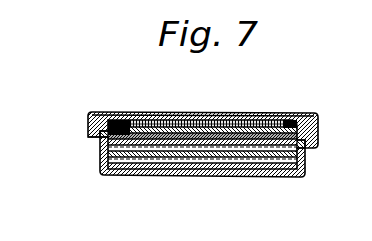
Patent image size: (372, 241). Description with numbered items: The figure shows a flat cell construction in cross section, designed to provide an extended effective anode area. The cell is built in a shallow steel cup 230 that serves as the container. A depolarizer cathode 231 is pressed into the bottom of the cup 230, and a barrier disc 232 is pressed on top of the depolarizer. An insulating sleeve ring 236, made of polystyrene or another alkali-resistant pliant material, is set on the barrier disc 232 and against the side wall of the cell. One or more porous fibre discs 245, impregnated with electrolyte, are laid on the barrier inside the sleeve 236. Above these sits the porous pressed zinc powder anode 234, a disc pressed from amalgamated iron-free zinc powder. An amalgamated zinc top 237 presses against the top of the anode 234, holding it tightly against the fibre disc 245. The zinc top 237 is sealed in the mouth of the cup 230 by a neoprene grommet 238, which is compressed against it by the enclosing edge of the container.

The neoprene grommet 238 is at (88, 119).
The insulating sleeve ring 236 is at (99, 147).
The amalgamated zinc top 237 is at (260, 138).
The porous pressed zinc powder anode 234 is at (243, 144).
The porous fibre disc 245 is at (203, 150).
The barrier disc 232 is at (158, 160).
The depolarizer cathode 231 is at (133, 196).
The shallow steel cup 230 is at (100, 160).